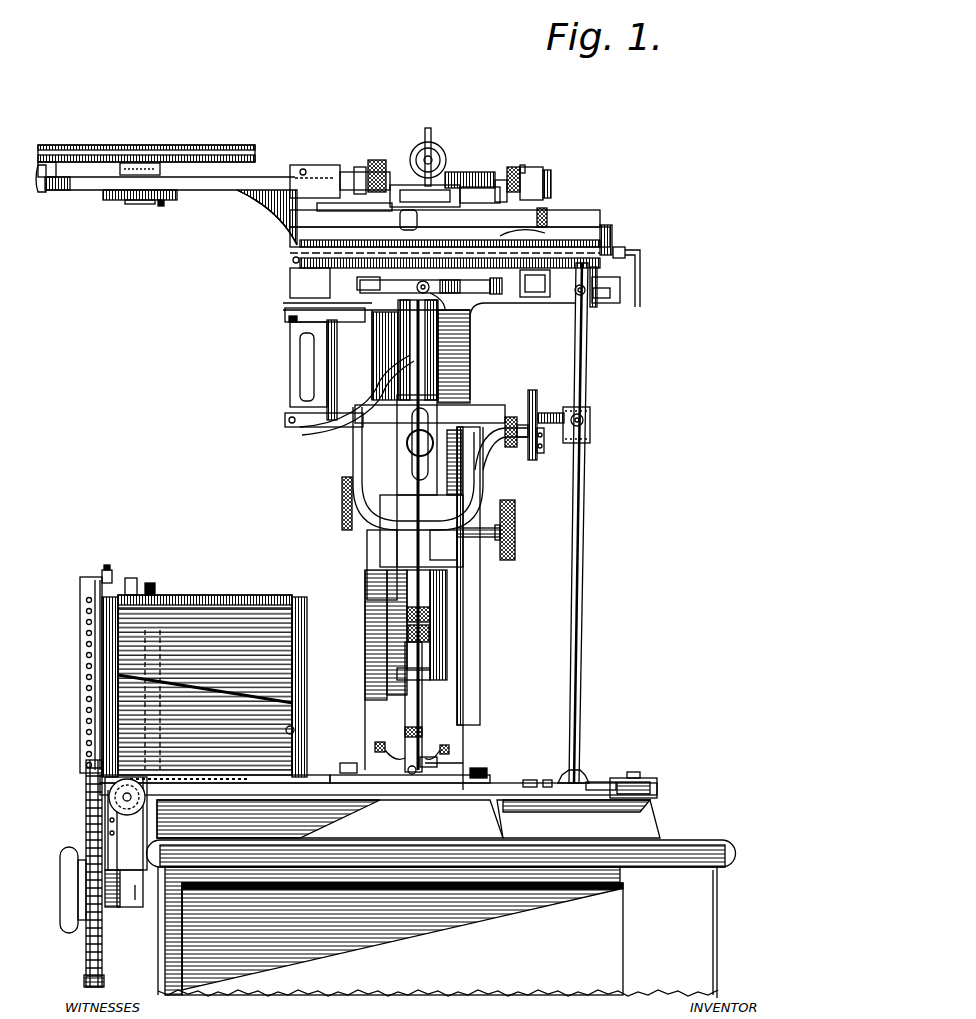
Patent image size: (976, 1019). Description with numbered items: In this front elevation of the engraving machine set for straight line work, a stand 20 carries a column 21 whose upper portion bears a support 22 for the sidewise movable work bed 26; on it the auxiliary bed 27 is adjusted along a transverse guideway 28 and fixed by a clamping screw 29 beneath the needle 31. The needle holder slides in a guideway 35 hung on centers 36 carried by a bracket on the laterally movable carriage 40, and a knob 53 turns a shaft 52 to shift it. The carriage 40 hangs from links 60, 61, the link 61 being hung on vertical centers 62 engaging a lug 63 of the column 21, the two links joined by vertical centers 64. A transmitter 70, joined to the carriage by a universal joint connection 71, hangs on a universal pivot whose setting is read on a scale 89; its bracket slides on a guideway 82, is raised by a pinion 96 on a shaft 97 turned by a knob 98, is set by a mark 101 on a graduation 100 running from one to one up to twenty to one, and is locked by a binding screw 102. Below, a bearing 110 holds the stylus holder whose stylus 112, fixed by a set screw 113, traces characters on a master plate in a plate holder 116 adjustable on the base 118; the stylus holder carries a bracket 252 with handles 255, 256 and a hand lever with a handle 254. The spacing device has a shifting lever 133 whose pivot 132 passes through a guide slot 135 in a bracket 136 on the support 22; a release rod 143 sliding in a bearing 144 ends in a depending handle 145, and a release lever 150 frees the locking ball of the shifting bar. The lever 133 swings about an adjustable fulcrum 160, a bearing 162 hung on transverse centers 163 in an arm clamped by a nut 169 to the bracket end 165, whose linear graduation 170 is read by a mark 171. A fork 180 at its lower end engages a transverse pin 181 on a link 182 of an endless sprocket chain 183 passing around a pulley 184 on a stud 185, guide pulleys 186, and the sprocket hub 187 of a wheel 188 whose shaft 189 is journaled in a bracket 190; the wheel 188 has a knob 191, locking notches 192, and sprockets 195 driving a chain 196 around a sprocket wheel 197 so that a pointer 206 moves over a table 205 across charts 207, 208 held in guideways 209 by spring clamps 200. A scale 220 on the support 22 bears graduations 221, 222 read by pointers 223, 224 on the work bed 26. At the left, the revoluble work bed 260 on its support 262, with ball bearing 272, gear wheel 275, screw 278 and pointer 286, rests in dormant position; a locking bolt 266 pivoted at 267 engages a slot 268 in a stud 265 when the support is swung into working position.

The table 20 is at (441, 919).
The body 21 is at (471, 326).
The carriage block 22 is at (275, 262).
The carriage bar 26 is at (586, 232).
The bracket 27 is at (322, 211).
The graduated rail 28 is at (305, 236).
The knurled nut 29 is at (548, 217).
The hand wheel 31 is at (430, 140).
The head block 35 is at (410, 185).
The collar 36 is at (500, 180).
The nut 40 is at (502, 287).
The knurled nut 52 is at (512, 167).
The pin 53 is at (522, 165).
The slide 60 is at (300, 385).
The housing 61 is at (290, 365).
The yoke 62 is at (352, 462).
The curved arm 63 is at (368, 373).
The bracket 64 is at (286, 318).
The guide 70 is at (455, 348).
The shaft 71 is at (458, 293).
The frame 82 is at (382, 565).
The slotted plate 89 is at (398, 438).
The support 96 is at (410, 532).
The shaft 97 is at (490, 540).
The knob 98 is at (512, 508).
The scale 100 is at (476, 631).
The index 101 is at (463, 553).
The knurled screw 102 is at (342, 518).
The spindle 110 is at (415, 710).
The base plate 112 is at (400, 781).
The tip 113 is at (408, 770).
The bed plate 116 is at (317, 783).
The pedestal 118 is at (650, 818).
The screw 132 is at (575, 295).
The column 133 is at (585, 352).
The slot 135 is at (604, 298).
The block 136 is at (620, 281).
The bracket 143 is at (640, 252).
The block 144 is at (619, 247).
The arm 145 is at (641, 302).
The strip 150 is at (597, 283).
The arm 160 is at (556, 403).
The clamp 162 is at (590, 434).
The screw 163 is at (585, 418).
The graduated plate 165 is at (534, 390).
The knob 169 is at (512, 417).
The arm 170 is at (527, 460).
The bracket 171 is at (543, 452).
The column foot 180 is at (579, 776).
The block 181 is at (555, 783).
The plate 182 is at (580, 786).
The base 183 is at (262, 803).
The knob 184 is at (657, 786).
The pin 185 is at (640, 772).
The wheel 186 is at (131, 815).
The bearing 187 is at (112, 908).
The chain 188 is at (86, 828).
The pin 189 is at (135, 900).
The bracket 190 is at (143, 870).
The handle 191 is at (65, 893).
The chain link 192 is at (100, 965).
The chain end 195 is at (84, 978).
The link 196 is at (90, 788).
The post 197 is at (107, 566).
The drum end 200 is at (306, 660).
The drum 205 is at (233, 600).
The line 206 is at (298, 690).
The inner drum 207 is at (173, 612).
The stud 208 is at (292, 740).
The perforated strip 209 is at (292, 642).
The pivot 220 is at (297, 262).
The bar 221 is at (540, 232).
The block 222 is at (518, 290).
The nut 223 is at (360, 280).
The link 224 is at (452, 304).
The block 252 is at (430, 767).
The rod 254 is at (465, 763).
The arm 255 is at (390, 736).
The arm 256 is at (449, 750).
The arm 260 is at (163, 153).
The lever 262 is at (75, 190).
The plate 265 is at (551, 186).
The knurled nut 266 is at (345, 170).
The block 267 is at (304, 168).
The block 268 is at (543, 175).
The gear 272 is at (160, 169).
The pin 275 is at (164, 205).
The rack 278 is at (145, 204).
The cap 286 is at (40, 188).